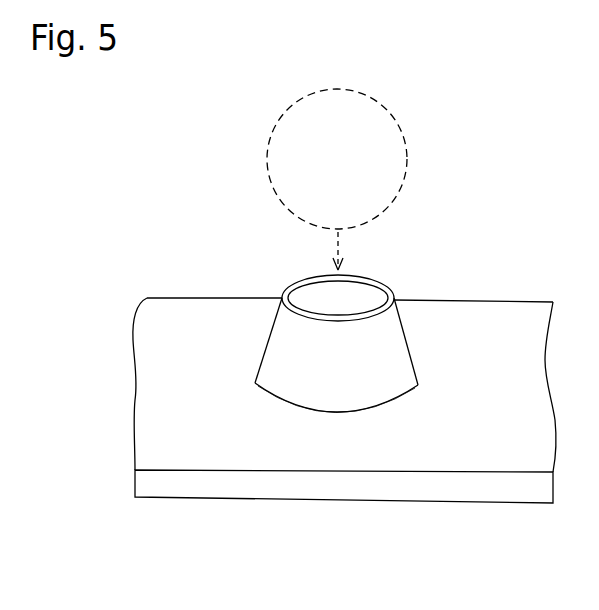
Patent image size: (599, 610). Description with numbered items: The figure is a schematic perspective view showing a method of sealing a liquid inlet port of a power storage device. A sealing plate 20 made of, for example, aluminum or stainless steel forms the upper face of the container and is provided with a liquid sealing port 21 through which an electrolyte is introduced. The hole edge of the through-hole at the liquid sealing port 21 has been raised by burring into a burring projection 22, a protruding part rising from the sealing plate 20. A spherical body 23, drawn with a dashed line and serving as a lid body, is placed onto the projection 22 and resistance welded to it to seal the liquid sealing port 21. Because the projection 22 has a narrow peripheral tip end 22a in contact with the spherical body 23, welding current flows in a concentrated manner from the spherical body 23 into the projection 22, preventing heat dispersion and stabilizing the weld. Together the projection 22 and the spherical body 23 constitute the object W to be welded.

The object to be welded W is at (226, 208).
The sealing plate 20 is at (472, 443).
The liquid sealing port 21 is at (330, 413).
The burring projection 22 is at (370, 360).
The peripheral tip end 22a is at (297, 293).
The spherical body 23 is at (400, 180).